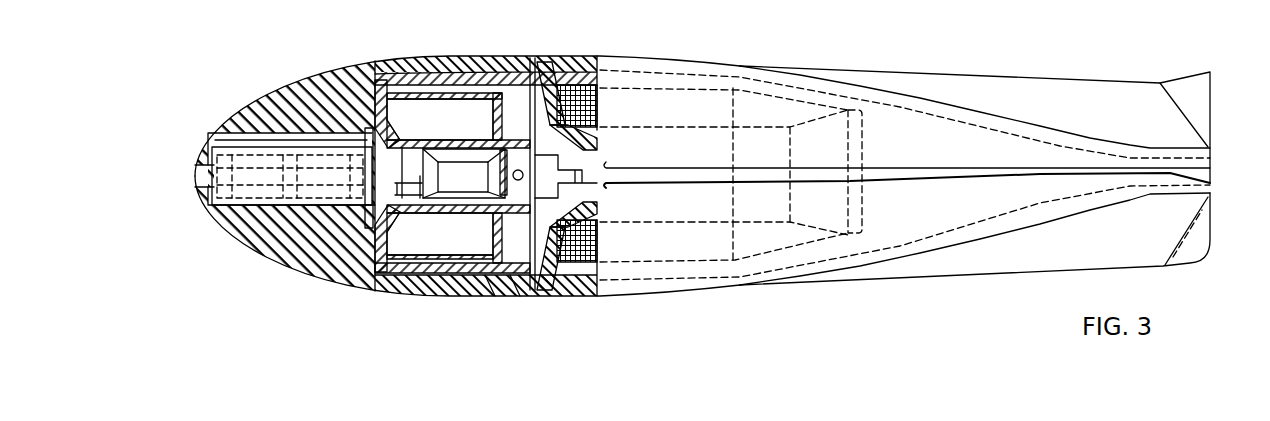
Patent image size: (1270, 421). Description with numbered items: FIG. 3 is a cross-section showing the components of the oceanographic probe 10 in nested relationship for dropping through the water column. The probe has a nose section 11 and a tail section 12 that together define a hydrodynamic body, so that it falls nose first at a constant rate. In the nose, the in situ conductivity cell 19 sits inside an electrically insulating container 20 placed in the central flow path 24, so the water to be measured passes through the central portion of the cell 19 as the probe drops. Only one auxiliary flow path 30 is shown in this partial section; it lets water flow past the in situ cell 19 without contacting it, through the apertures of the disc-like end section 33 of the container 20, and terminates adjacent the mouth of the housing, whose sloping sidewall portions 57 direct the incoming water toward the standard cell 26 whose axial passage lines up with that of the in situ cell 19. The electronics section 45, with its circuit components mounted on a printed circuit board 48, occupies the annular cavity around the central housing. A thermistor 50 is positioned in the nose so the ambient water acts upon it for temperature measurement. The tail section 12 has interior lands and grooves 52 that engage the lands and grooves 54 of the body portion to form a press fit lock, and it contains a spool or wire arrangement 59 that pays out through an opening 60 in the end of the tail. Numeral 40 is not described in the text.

The oceanographic probe 10 is at (593, 43).
The nose section 11 is at (452, 76).
The tail section 12 is at (740, 66).
The in situ conductivity cell 19 is at (262, 150).
The electrically insulating container 20 is at (285, 147).
The central flow path 24 is at (195, 175).
The standard cell 26 is at (458, 162).
The auxiliary flow path 30 is at (205, 133).
The disc-like end section 33 is at (366, 128).
The bracket 40 is at (410, 196).
The electronics section 45 is at (464, 108).
The printed circuit board 48 is at (432, 62).
The thermistor 50 is at (513, 175).
The lands and grooves 52 is at (532, 295).
The lands and grooves 54 is at (505, 292).
The sloping sidewall portions 57 is at (396, 150).
The spool or wire arrangement 59 is at (600, 109).
The opening 60 is at (1212, 172).